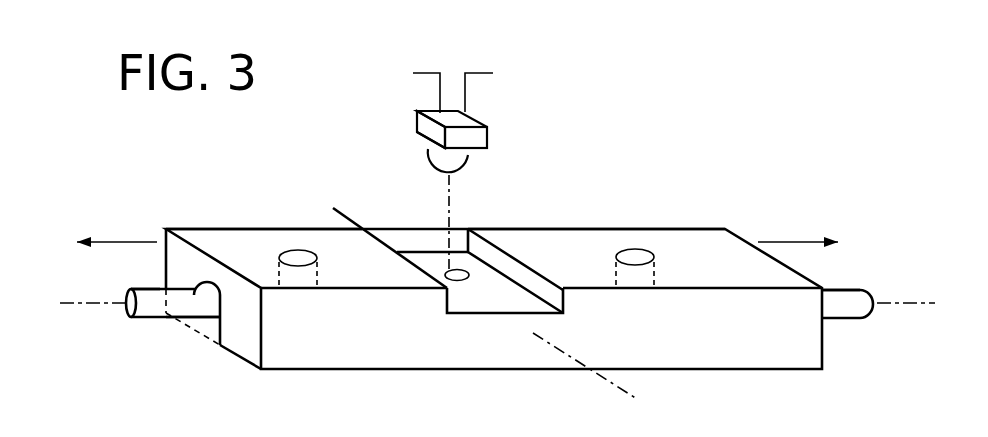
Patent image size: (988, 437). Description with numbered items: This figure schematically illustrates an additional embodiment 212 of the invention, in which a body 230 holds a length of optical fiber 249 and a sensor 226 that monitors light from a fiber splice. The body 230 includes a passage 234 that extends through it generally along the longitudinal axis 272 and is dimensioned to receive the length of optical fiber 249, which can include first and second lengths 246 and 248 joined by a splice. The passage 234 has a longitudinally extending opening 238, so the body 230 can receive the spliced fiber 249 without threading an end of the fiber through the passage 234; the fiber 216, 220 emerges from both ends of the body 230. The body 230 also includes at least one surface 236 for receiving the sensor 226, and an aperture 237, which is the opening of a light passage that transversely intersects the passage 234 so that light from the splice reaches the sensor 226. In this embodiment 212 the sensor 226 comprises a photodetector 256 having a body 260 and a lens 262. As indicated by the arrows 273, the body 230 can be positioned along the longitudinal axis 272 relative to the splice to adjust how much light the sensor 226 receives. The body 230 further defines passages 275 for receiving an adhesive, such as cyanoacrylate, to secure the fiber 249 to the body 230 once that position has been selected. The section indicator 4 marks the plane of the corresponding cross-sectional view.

The section line 4- 4 is at (340, 213).
The embodiment 212 is at (625, 80).
The inlet tube 216 is at (142, 320).
The outlet tube 220 is at (848, 321).
The sensor 226 is at (462, 126).
The body 230 is at (718, 338).
The passage 234 is at (200, 281).
The surface 236 is at (468, 301).
The aperture 237 is at (438, 273).
The longitudinally extending opening 238 is at (200, 320).
The first length of optical fiber 246 is at (148, 298).
The second length of optical fiber 248 is at (853, 298).
The length of optical fiber 249 is at (833, 298).
The photodetector 256 is at (483, 133).
The body of photodetector 260 is at (428, 142).
The lens 262 is at (462, 161).
The longitudinal axis 272 is at (73, 304).
The arrows 273 is at (117, 242).
The passages 275 is at (288, 246).